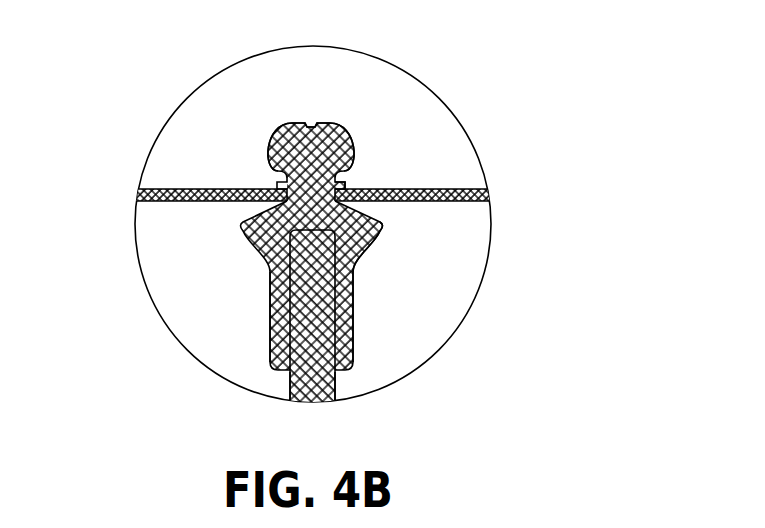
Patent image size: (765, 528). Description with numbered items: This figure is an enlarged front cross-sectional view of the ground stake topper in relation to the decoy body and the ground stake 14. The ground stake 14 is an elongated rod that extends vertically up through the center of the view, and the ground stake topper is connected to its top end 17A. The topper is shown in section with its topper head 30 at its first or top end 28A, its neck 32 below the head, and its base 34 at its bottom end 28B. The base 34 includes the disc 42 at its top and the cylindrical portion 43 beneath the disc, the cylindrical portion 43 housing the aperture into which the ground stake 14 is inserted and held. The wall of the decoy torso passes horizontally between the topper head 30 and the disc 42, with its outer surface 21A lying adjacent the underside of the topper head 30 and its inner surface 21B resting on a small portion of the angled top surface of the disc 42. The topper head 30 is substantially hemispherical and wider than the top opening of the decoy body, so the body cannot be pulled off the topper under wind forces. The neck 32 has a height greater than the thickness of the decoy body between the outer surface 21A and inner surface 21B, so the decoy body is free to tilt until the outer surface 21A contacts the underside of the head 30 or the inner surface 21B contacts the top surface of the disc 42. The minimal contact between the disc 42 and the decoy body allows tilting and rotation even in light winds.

The ground stake 14 is at (338, 377).
The top end 17A is at (302, 373).
The outer surface 21A is at (170, 189).
The inner surface 21B is at (160, 202).
The first/top end 28A is at (335, 112).
The bottom end 28B is at (357, 331).
The topper head 30 is at (277, 138).
The neck 32 is at (348, 186).
The base 34 is at (264, 303).
The disc 42 is at (358, 223).
The cylindrical portion 43 is at (358, 306).